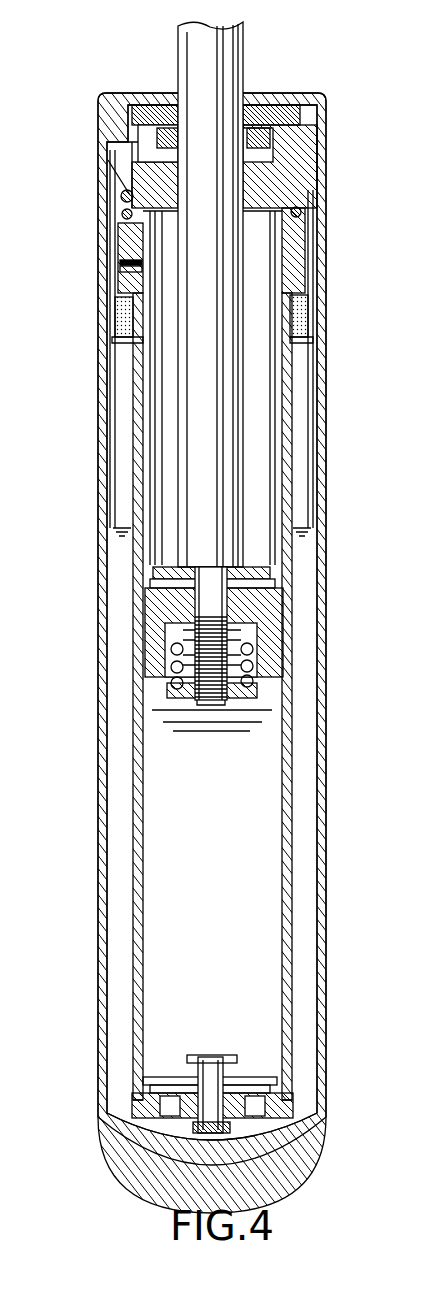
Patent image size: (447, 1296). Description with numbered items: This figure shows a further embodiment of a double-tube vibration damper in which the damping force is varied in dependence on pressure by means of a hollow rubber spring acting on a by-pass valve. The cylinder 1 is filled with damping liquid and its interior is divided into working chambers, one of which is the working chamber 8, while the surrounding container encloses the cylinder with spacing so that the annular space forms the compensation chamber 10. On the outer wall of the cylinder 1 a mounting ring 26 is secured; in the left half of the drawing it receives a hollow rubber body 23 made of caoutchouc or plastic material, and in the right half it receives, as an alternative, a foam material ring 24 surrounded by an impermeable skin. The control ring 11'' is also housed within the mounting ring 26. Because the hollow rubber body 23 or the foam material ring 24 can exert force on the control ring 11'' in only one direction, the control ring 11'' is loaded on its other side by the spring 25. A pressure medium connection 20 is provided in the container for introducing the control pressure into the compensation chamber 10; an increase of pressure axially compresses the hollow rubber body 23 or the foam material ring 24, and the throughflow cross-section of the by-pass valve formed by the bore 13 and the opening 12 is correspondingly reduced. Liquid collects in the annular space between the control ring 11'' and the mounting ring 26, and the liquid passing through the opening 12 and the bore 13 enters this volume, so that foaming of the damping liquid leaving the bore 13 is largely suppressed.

The cylinder 1 is at (287, 468).
The working chamber 8 is at (160, 457).
The compensation chamber 10 is at (122, 573).
The control ring 11'' is at (261, 250).
The opening 12 is at (133, 270).
The bore 13 is at (137, 265).
The pressure medium connection 20 is at (100, 153).
The hollow rubber body 23 is at (122, 325).
The foam material ring 24 is at (298, 325).
The spring 25 is at (301, 212).
The mounting ring 26 is at (110, 286).